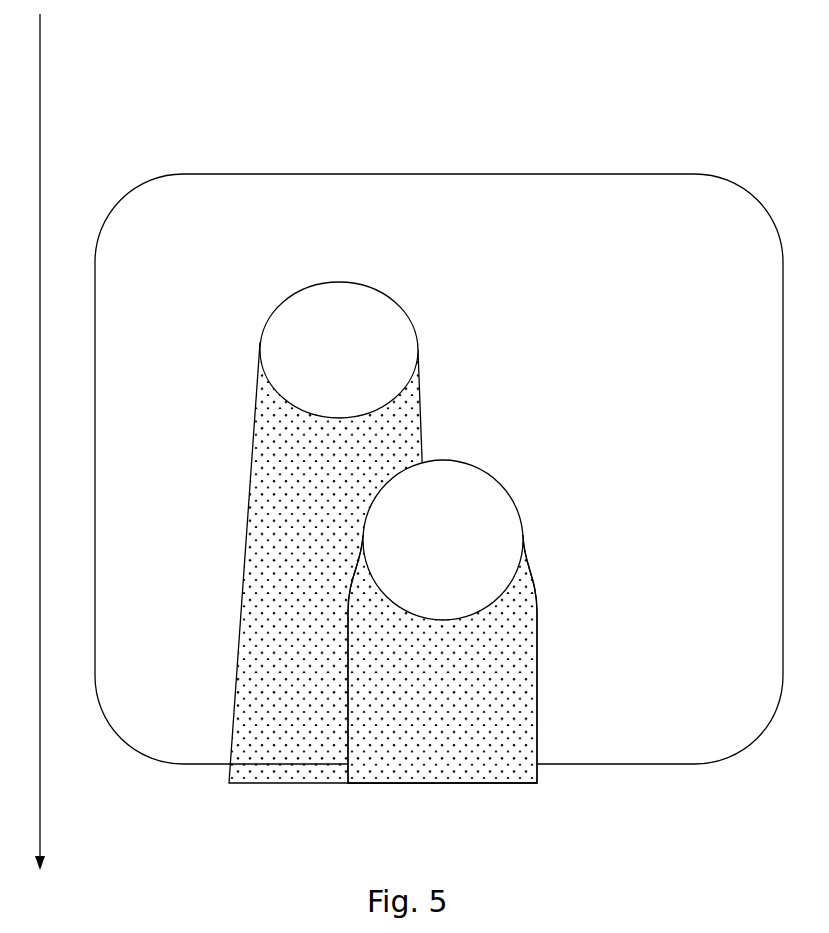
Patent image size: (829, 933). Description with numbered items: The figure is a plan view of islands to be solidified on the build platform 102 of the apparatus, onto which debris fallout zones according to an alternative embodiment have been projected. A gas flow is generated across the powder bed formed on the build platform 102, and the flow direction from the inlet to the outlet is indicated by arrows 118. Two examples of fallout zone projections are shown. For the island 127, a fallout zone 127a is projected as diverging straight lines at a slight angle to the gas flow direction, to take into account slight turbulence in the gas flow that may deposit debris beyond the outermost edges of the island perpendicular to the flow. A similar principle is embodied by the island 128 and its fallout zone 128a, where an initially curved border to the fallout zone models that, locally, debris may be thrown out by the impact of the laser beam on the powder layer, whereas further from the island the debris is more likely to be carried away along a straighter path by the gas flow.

The arrows 118 is at (54, 67).
The build platform 102 is at (666, 161).
The island 127 is at (365, 299).
The fallout zone 127a is at (244, 501).
The island 128 is at (507, 532).
The fallout zone 128a is at (520, 684).